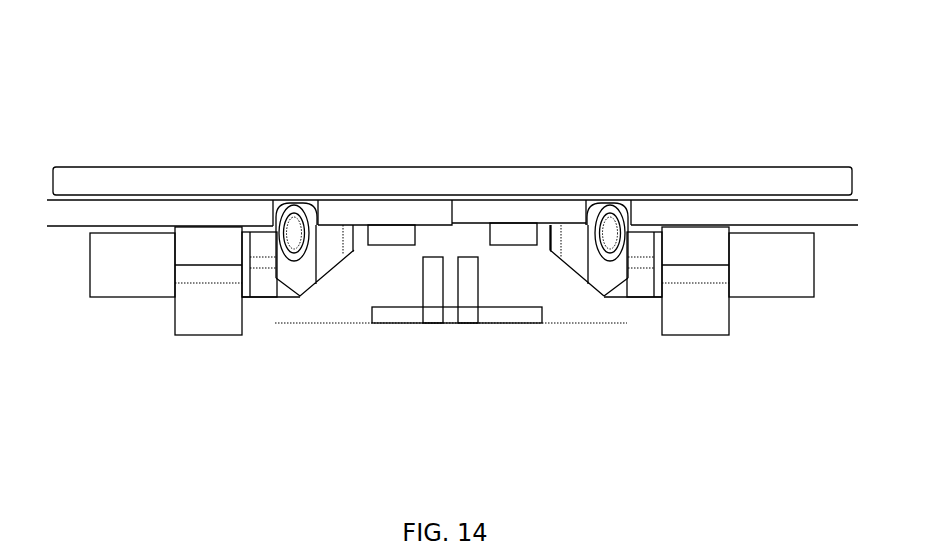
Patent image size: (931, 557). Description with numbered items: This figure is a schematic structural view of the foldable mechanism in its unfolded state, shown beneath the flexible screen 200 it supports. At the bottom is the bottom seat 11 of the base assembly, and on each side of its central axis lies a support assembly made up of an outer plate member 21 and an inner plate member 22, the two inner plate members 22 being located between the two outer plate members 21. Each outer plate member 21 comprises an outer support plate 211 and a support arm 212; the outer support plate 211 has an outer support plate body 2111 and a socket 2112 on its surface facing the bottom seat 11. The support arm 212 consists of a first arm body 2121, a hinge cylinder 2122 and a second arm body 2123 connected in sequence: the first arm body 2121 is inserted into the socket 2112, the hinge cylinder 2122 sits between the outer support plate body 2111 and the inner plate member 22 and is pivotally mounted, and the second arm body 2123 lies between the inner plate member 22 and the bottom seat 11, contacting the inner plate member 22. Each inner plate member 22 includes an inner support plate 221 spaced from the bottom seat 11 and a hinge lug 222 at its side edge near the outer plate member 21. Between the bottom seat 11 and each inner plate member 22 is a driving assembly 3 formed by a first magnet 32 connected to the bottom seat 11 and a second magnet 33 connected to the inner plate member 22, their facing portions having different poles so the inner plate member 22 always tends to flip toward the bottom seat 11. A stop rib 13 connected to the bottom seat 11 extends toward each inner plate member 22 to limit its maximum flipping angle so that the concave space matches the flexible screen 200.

The flexible screen 200 is at (734, 186).
The outer plate member 21 is at (118, 65).
The support arm 212 is at (115, 250).
The outer support plate 211 is at (230, 110).
The outer support plate body 2111 is at (170, 212).
The socket 2112 is at (208, 240).
The first arm body 2121 is at (749, 277).
The hinge cylinder 2122 is at (610, 272).
The second arm body 2123 is at (568, 262).
The inner plate member 22 is at (560, 108).
The inner support plate 221 is at (547, 213).
The hinge lug 222 is at (598, 212).
The stop rib 13 is at (435, 255).
The driving assembly 3 is at (377, 408).
The first magnet 32 is at (398, 315).
The second magnet 33 is at (500, 245).
The bottom seat 11 is at (318, 322).